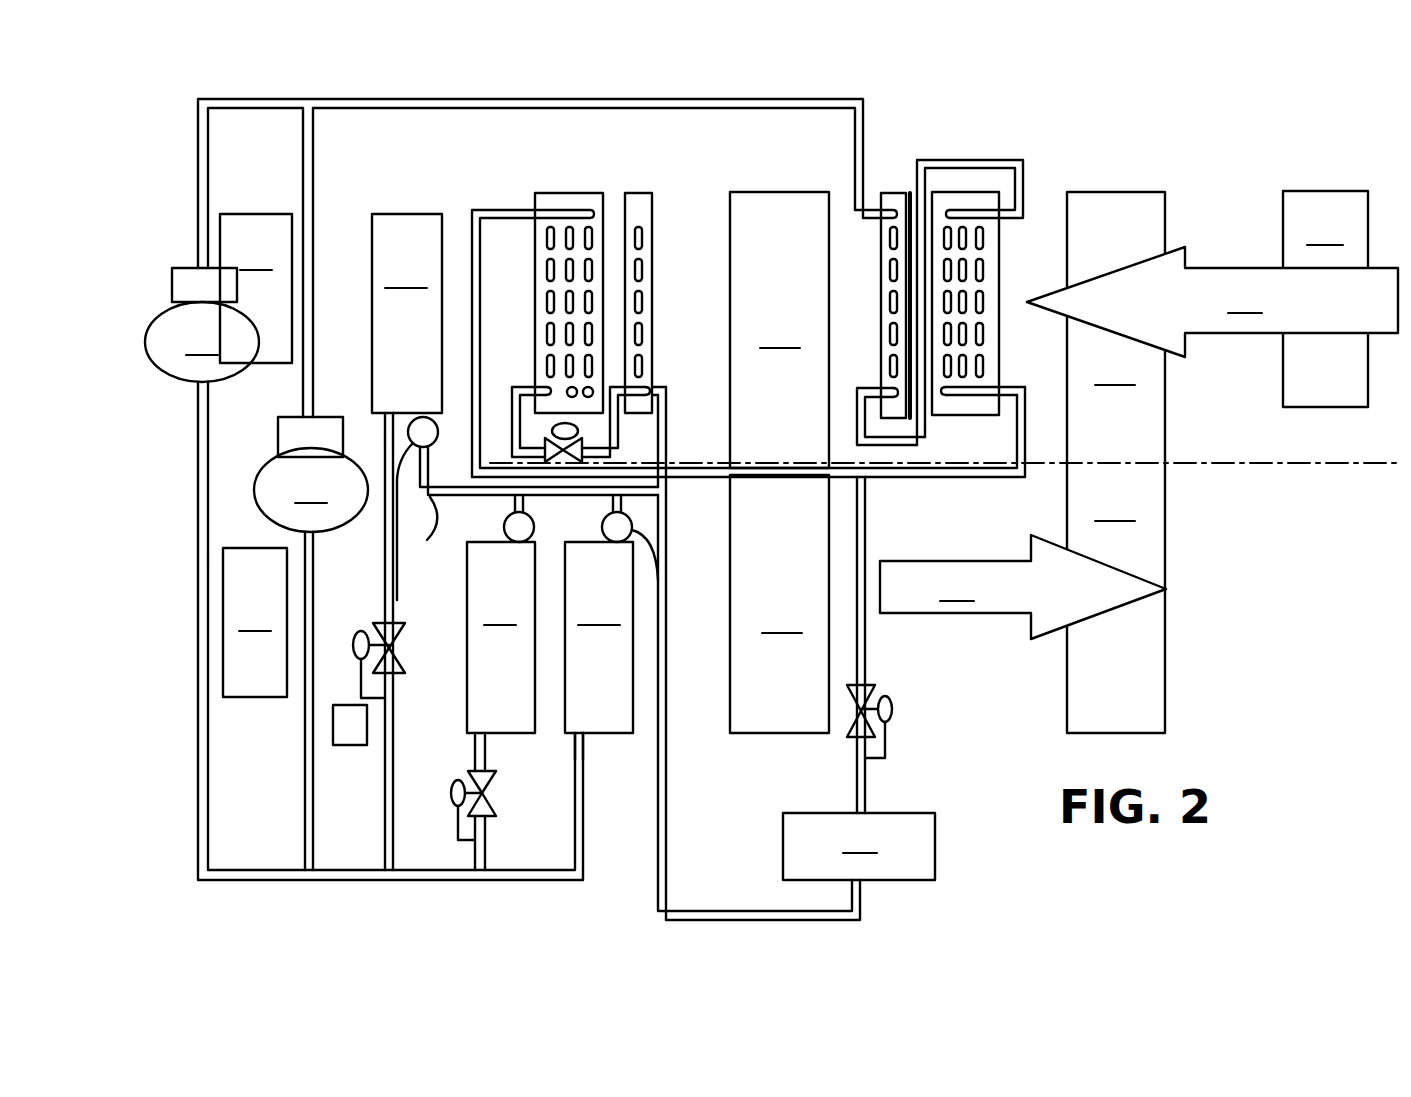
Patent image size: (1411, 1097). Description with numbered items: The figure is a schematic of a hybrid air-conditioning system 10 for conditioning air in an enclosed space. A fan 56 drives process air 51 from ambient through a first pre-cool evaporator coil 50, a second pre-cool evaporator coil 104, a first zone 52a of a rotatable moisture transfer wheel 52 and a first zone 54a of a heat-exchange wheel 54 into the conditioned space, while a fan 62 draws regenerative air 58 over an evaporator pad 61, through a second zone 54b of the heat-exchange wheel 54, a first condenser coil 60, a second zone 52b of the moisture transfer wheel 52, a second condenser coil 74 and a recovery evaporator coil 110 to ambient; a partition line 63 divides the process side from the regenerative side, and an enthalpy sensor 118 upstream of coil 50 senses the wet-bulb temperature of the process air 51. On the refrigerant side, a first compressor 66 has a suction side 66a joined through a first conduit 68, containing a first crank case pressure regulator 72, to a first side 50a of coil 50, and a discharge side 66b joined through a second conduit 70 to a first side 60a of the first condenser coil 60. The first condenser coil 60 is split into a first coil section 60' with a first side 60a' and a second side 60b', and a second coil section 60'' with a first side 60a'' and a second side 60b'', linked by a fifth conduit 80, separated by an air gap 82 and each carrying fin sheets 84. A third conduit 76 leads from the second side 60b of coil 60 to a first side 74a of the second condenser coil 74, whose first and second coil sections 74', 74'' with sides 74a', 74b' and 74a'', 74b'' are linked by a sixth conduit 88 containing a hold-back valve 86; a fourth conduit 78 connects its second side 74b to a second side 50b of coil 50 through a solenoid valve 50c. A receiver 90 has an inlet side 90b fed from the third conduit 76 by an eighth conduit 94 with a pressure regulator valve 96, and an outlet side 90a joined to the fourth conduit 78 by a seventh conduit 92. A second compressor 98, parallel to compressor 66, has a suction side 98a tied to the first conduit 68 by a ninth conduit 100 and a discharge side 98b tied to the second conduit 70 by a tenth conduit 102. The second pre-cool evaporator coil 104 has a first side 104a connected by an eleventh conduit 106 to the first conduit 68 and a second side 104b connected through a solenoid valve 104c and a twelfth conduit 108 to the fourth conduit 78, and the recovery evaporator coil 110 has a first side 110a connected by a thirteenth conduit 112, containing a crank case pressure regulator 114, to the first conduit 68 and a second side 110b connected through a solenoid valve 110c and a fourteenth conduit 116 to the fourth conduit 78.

The hybrid air-conditioning system 10 is at (1094, 118).
The first pre-cool evaporator coil 50 is at (501, 637).
The first side of first pre-cool evaporator coil 50a is at (486, 750).
The second side of first pre-cool evaporator coil 50b is at (470, 540).
The solenoid valve 50c is at (504, 523).
The process air 51 is at (1023, 587).
The rotatable moisture transfer wheel 52 is at (730, 558).
The first zone of moisture transfer wheel 52a is at (779, 604).
The second zone of moisture transfer wheel 52b is at (779, 330).
The rotatable heat-exchange wheel 54 is at (1166, 478).
The first zone of heat-exchange wheel 54a is at (1114, 508).
The second zone of heat-exchange wheel 54b is at (1115, 372).
The fan 56 is at (255, 622).
The regenerative air 58 is at (1212, 302).
The first condenser coil 60 is at (1030, 125).
The first coil section of first condenser coil 60' is at (868, 305).
The second coil section of first condenser coil 60'' is at (991, 303).
The first side of first condenser coil 60a is at (894, 168).
The first side of first coil section 60a' is at (857, 247).
The first side of second coil section 60a'' is at (1063, 158).
The second side of first condenser coil 60b is at (1037, 412).
The second side of first coil section 60b' is at (876, 393).
The second side of second coil section 60b'' is at (999, 366).
The evaporator pad 61 is at (1325, 299).
The fan 62 is at (256, 288).
The partition 63 is at (1297, 463).
The first compressor 66 is at (202, 342).
The suction side of first compressor 66a is at (208, 400).
The discharge side of first compressor 66b is at (193, 268).
The first conduit 68 is at (198, 556).
The second conduit 70 is at (198, 150).
The first crank case pressure regulator 72 is at (495, 793).
The second condenser coil 74 is at (646, 139).
The first coil section of second condenser coil 74' is at (669, 303).
The second coil section of second condenser coil 74'' is at (550, 303).
The first side of second condenser coil 74a is at (501, 184).
The first side of first coil section of second condenser coil 74a' is at (668, 185).
The first side of second coil section of second condenser coil 74a'' is at (555, 172).
The second side of second condenser coil 74b is at (687, 393).
The second side of first coil section of second condenser coil 74b' is at (650, 403).
The second side of second coil section of second condenser coil 74b'' is at (513, 406).
The third conduit 76 is at (480, 314).
The fourth conduit 78 is at (592, 494).
The fifth conduit 80 is at (945, 160).
The air gap 82 is at (612, 200).
The fin sheets 84 is at (536, 306).
The hold-back valve 86 is at (572, 430).
The sixth conduit 88 is at (605, 432).
The refrigeration fluid receiver 90 is at (859, 846).
The outlet side of receiver 90a is at (868, 895).
The inlet side of receiver 90b is at (866, 810).
The seventh conduit 92 is at (667, 728).
The eighth conduit 94 is at (866, 626).
The pressure regulator valve 96 is at (888, 697).
The second compressor 98 is at (311, 474).
The suction side of second compressor 98a is at (313, 535).
The discharge side of second compressor 98b is at (313, 415).
The ninth conduit 100 is at (313, 758).
The tenth conduit 102 is at (318, 188).
The second pre-cool evaporator coil 104 is at (599, 637).
The first side of second pre-cool evaporator coil 104a is at (583, 750).
The second side of second pre-cool evaporator coil 104b is at (602, 531).
The solenoid valve 104c is at (660, 580).
The eleventh conduit 106 is at (584, 822).
The twelfth conduit 108 is at (648, 529).
The recovery evaporator coil 110 is at (407, 313).
The first side of recovery evaporator coil 110a is at (393, 413).
The second side of recovery evaporator coil 110b is at (442, 410).
The solenoid valve 110c is at (410, 521).
The thirteenth conduit 112 is at (385, 597).
The crank case pressure regulator 114 is at (395, 645).
The fourteenth conduit 116 is at (427, 541).
The enthalpy sensor 118 is at (346, 706).